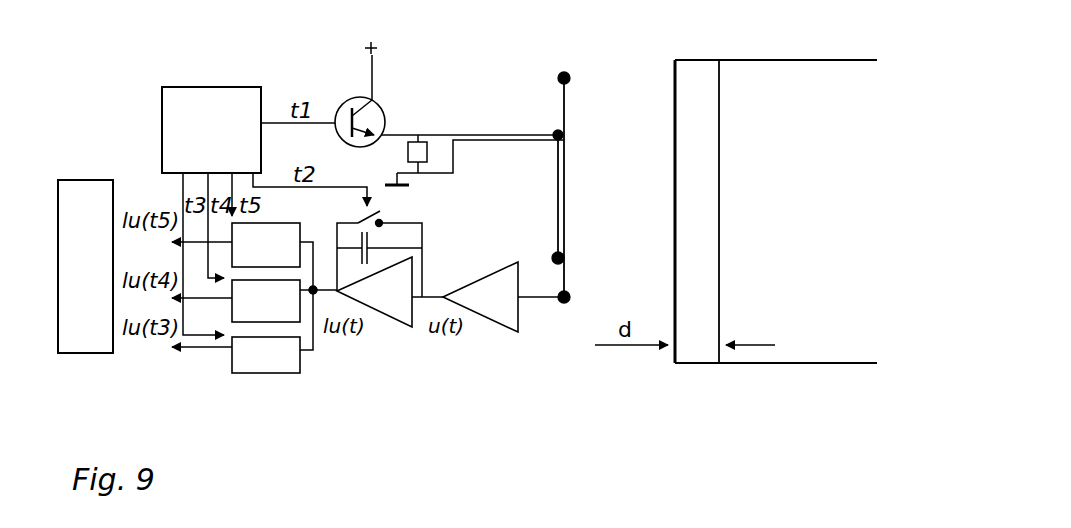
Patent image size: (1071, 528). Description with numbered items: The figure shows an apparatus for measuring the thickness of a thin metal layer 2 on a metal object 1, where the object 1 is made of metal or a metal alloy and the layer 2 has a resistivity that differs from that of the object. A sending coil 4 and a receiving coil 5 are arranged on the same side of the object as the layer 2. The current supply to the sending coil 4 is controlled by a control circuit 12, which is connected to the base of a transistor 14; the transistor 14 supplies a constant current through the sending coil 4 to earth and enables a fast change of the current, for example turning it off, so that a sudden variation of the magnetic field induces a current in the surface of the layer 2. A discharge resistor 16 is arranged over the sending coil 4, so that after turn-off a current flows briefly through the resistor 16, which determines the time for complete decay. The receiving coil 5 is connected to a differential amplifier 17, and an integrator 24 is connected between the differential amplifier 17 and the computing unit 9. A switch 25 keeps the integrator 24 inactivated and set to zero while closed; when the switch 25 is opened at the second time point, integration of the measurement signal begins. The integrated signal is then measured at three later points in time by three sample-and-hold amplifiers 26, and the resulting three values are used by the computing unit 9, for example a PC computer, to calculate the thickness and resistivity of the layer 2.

The metal object 1 is at (795, 75).
The metal layer 2 is at (695, 75).
The sending coil 4 is at (556, 190).
The receiving coil 5 is at (567, 184).
The computing unit 9 is at (92, 340).
The control circuit 12 is at (195, 97).
The transistor 14 is at (353, 100).
The discharge resistor 16 is at (420, 152).
The differential amplifier 17 is at (503, 315).
The integrator 24 is at (397, 308).
The switch 25 is at (358, 219).
The sample-and-hold amplifiers 26 is at (300, 265).